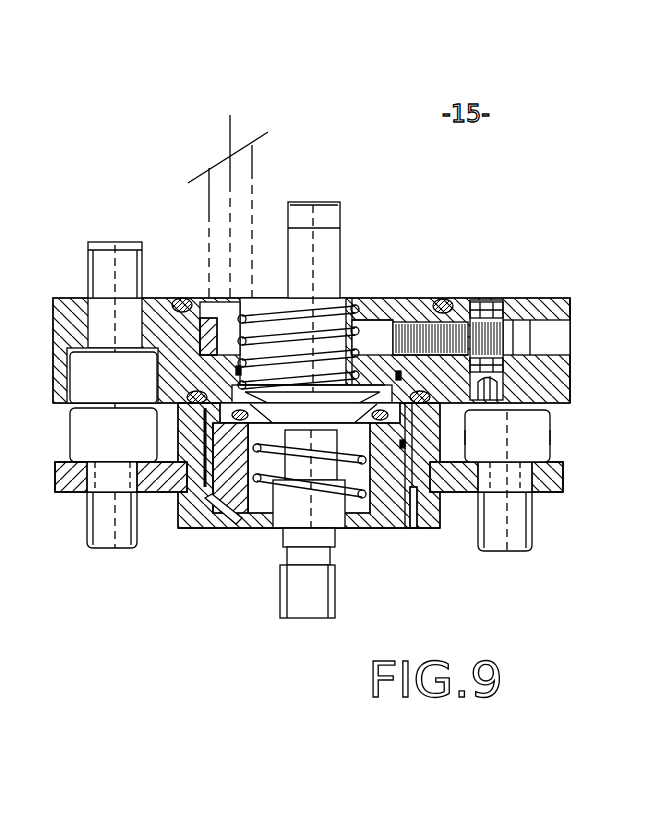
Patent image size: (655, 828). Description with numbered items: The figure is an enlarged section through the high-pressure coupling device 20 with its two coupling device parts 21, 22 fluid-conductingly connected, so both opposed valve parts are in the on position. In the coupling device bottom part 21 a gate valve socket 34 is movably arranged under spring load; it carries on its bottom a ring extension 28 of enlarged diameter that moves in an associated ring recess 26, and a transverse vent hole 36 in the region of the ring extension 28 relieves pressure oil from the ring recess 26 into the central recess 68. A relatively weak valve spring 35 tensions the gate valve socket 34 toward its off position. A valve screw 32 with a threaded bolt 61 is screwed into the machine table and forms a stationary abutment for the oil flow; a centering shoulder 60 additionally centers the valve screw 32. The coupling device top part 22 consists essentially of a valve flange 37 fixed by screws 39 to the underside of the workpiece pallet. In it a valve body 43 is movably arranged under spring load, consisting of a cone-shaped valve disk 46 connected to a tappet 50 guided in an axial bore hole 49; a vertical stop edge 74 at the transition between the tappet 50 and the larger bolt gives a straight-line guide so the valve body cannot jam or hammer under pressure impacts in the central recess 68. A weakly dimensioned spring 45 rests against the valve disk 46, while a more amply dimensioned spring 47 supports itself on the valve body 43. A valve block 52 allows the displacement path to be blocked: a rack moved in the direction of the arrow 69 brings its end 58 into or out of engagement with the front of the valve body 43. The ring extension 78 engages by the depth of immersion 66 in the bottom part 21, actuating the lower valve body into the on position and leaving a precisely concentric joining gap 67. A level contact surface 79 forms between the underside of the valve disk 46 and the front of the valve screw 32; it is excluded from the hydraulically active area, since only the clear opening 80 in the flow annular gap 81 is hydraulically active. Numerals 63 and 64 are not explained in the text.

The high-pressure coupling device 20 is at (355, 217).
The coupling device bottom part 21 is at (480, 583).
The coupling device top part 22 is at (354, 320).
The ring recess 26 is at (413, 497).
The ring extension 28 is at (309, 508).
The valve screw 32 is at (292, 505).
The gate valve socket 34 is at (212, 527).
The valve spring 35 is at (357, 505).
The transverse vent hole 36 is at (237, 530).
The valve flange 37 is at (550, 378).
The screws 39 is at (112, 263).
The valve body 43 is at (222, 353).
The spring 45 is at (340, 398).
The cone-shaped valve disk 46 is at (313, 397).
The spring 47 is at (242, 313).
The axial bore hole 49 is at (323, 217).
The tappet 50 is at (331, 256).
The valve block 52 is at (490, 287).
The end of the rack 58 is at (410, 300).
The centering shoulder 60 is at (333, 535).
The threaded bolt 61 is at (282, 617).
The right side port 63 is at (612, 291).
The right side outlet 64 is at (612, 411).
The depth of immersion 66 is at (400, 417).
The joining gap 67 is at (440, 423).
The central recess 68 is at (362, 336).
The arrow 69 is at (464, 275).
The vertical stop edge 74 is at (279, 298).
The ring extension 78 is at (440, 423).
The contact surface 79 is at (367, 337).
The clear opening 80 is at (240, 387).
The flow annular gap 81 is at (240, 387).